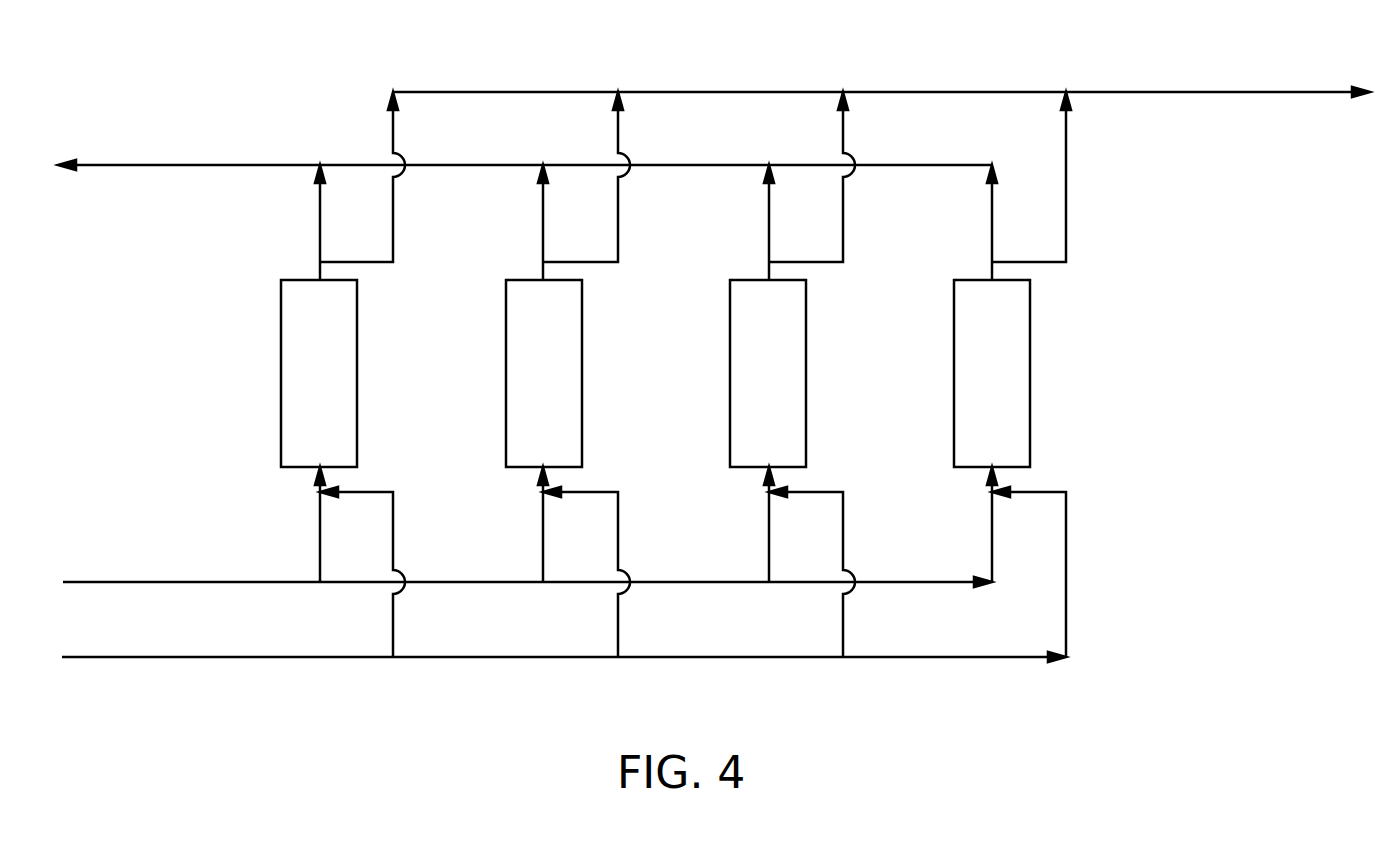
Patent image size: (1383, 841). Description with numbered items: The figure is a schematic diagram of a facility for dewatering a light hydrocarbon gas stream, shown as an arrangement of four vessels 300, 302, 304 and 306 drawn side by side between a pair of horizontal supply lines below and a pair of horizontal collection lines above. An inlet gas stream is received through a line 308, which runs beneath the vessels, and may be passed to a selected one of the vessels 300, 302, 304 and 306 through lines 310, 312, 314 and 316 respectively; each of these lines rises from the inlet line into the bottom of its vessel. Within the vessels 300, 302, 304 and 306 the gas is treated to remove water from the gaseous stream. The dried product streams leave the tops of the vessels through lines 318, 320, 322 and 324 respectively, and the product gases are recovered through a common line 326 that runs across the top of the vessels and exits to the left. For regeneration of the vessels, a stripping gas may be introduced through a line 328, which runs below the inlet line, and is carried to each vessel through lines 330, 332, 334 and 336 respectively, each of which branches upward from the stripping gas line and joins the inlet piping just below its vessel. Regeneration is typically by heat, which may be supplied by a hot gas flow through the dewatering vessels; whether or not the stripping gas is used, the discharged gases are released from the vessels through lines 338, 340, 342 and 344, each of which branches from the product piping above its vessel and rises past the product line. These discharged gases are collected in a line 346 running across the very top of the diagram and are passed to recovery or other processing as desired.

The vessel 300 is at (357, 386).
The vessel 302 is at (582, 386).
The vessel 304 is at (806, 386).
The vessel 306 is at (1030, 378).
The line 308 is at (168, 583).
The line 310 is at (320, 523).
The line 312 is at (543, 523).
The line 314 is at (769, 523).
The line 316 is at (992, 523).
The line 318 is at (320, 213).
The line 320 is at (543, 216).
The line 322 is at (769, 216).
The line 324 is at (992, 213).
The line 326 is at (183, 165).
The line 328 is at (260, 657).
The line 330 is at (393, 623).
The line 332 is at (618, 623).
The line 334 is at (843, 618).
The line 336 is at (1066, 595).
The line 338 is at (393, 238).
The line 340 is at (618, 243).
The line 342 is at (823, 263).
The line 344 is at (1067, 228).
The line 346 is at (1197, 92).